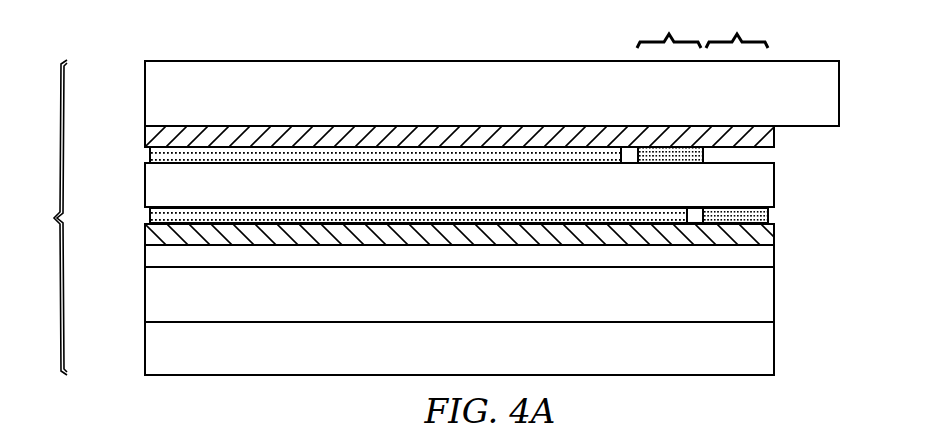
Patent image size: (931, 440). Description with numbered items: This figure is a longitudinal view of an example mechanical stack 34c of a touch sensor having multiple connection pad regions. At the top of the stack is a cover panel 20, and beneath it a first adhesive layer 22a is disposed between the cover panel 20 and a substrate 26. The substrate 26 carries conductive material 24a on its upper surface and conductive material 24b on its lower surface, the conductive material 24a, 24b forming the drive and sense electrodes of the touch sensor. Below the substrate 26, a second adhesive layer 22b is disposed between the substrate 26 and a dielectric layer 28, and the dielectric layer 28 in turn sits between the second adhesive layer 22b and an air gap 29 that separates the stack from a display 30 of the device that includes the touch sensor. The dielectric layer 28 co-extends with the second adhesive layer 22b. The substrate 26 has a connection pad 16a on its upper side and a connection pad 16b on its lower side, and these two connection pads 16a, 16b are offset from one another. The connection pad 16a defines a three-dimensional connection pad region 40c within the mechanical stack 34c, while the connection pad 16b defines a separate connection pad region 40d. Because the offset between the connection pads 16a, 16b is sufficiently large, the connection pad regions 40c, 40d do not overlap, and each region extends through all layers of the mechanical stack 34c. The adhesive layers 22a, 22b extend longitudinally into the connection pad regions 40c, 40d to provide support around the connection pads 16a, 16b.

The cover panel 20 is at (145, 93).
The first adhesive layer 22a is at (145, 137).
The conductive material 24a is at (150, 155).
The connection pad 16a is at (681, 156).
The substrate 26 is at (145, 188).
The conductive material 24b is at (150, 214).
The connection pad 16b is at (773, 213).
The second adhesive layer 22b is at (775, 233).
The dielectric layer 28 is at (775, 256).
The air gap 29 is at (775, 292).
The display 30 is at (775, 347).
The mechanical stack 34c is at (39, 217).
The connection pad region 40c is at (669, 28).
The connection pad region 40d is at (737, 28).